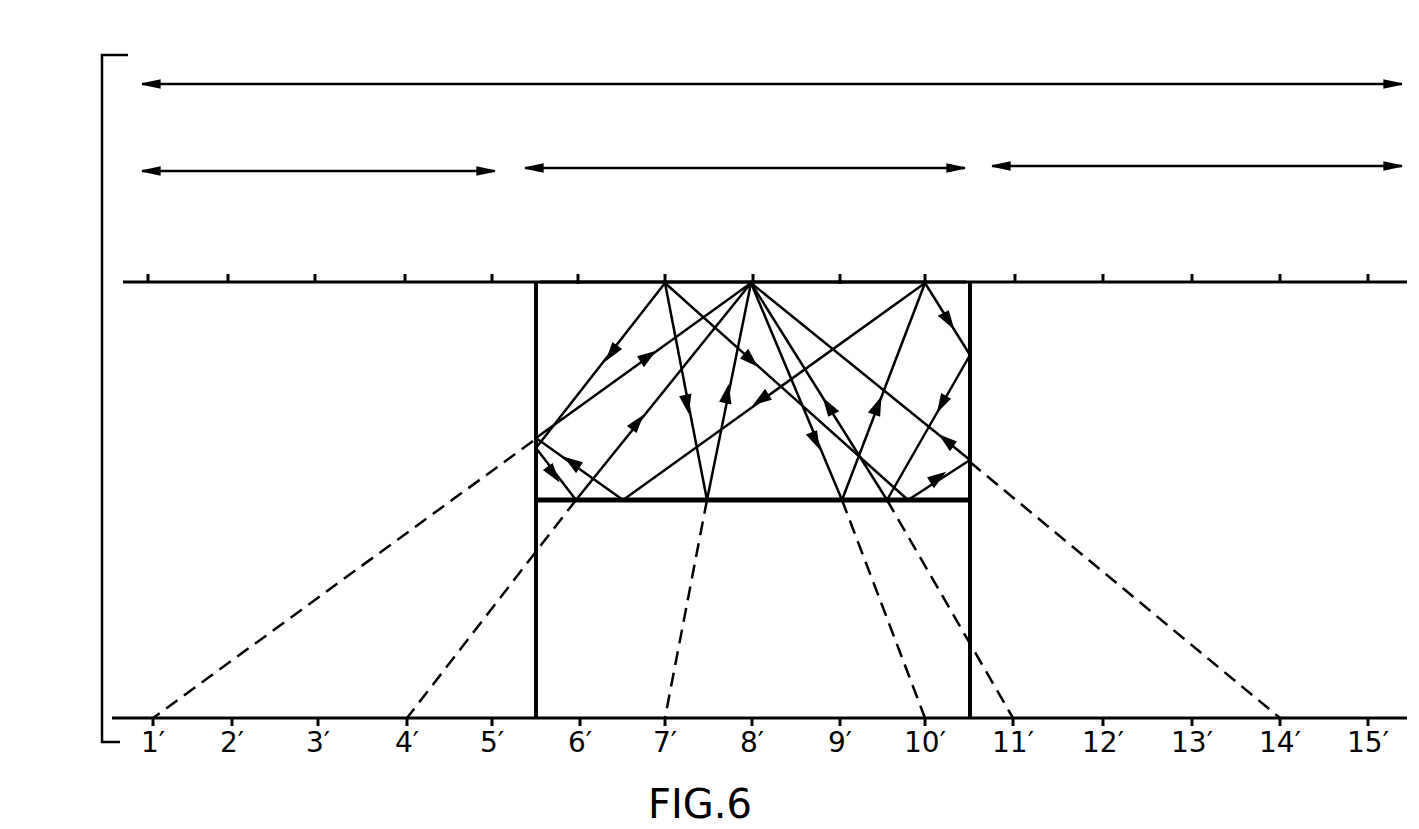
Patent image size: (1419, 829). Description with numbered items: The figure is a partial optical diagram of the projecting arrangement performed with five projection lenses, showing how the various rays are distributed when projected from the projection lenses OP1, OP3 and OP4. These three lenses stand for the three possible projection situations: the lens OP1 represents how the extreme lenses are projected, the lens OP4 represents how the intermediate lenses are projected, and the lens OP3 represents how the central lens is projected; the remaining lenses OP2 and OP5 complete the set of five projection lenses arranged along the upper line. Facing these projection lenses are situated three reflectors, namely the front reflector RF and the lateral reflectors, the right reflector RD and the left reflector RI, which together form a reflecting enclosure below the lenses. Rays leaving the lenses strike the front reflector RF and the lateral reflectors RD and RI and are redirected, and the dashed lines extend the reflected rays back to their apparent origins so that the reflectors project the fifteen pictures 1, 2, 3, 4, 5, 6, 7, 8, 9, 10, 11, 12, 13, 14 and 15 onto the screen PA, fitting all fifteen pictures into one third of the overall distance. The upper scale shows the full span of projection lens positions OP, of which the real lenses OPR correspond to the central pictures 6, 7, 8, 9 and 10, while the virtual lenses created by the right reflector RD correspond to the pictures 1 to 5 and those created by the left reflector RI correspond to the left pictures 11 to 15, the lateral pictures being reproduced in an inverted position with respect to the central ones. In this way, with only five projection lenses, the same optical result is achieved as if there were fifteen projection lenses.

The projection lenses OP is at (772, 71).
The real projection lenses OPR is at (745, 152).
The projection lens OP1 is at (935, 262).
The projection lens OP2 is at (848, 262).
The projection lens OP3 is at (763, 262).
The projection lens OP4 is at (675, 262).
The projection lens OP5 is at (587, 262).
The screen PA is at (953, 279).
The right lateral reflector RD is at (510, 500).
The left lateral reflector RI is at (992, 500).
The front reflector RF is at (753, 529).
The picture 1 is at (148, 242).
The picture 2 is at (228, 242).
The picture 3 is at (315, 242).
The picture 4 is at (405, 242).
The picture 5 is at (492, 242).
The picture 6 is at (578, 242).
The picture 7 is at (665, 242).
The picture 8 is at (753, 242).
The picture 9 is at (840, 242).
The picture 10 is at (925, 242).
The picture 11 is at (1015, 242).
The picture 12 is at (1103, 242).
The picture 13 is at (1192, 242).
The picture 14 is at (1280, 242).
The picture 15 is at (1368, 242).